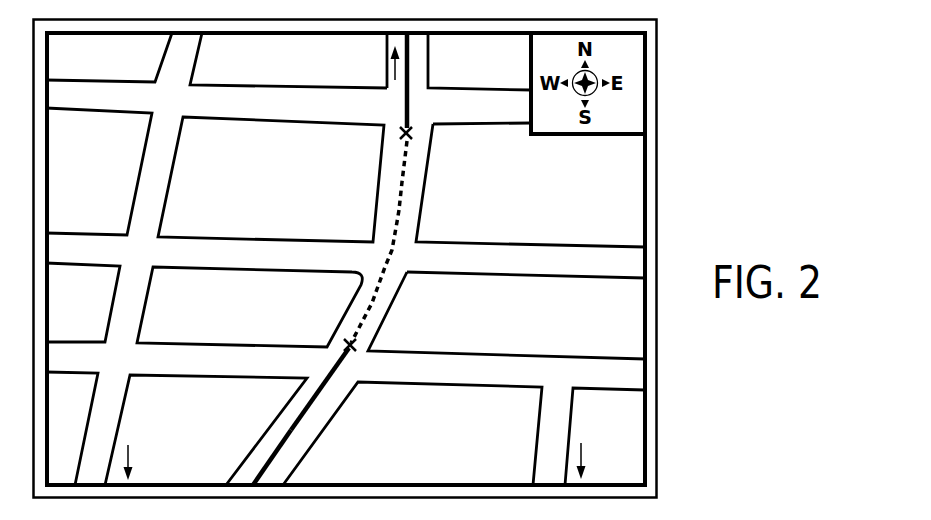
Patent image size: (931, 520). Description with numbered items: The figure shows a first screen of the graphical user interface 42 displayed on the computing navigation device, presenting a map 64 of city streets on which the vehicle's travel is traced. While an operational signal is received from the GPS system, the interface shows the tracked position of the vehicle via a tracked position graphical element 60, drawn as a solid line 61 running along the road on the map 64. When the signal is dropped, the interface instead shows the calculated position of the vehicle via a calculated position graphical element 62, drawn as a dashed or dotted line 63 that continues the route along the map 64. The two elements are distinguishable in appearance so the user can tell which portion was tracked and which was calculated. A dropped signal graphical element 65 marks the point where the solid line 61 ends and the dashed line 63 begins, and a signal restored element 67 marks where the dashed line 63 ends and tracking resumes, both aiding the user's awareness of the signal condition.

The graphical user interface 42 is at (658, 192).
The tracked position graphical element 60 is at (278, 452).
The solid line 61 is at (312, 408).
The calculated position graphical element 62 is at (398, 221).
The dashed or dotted line 63 is at (405, 178).
The map 64 is at (262, 184).
The dropped signal graphical element 65 is at (356, 341).
The signal restored element 67 is at (401, 130).